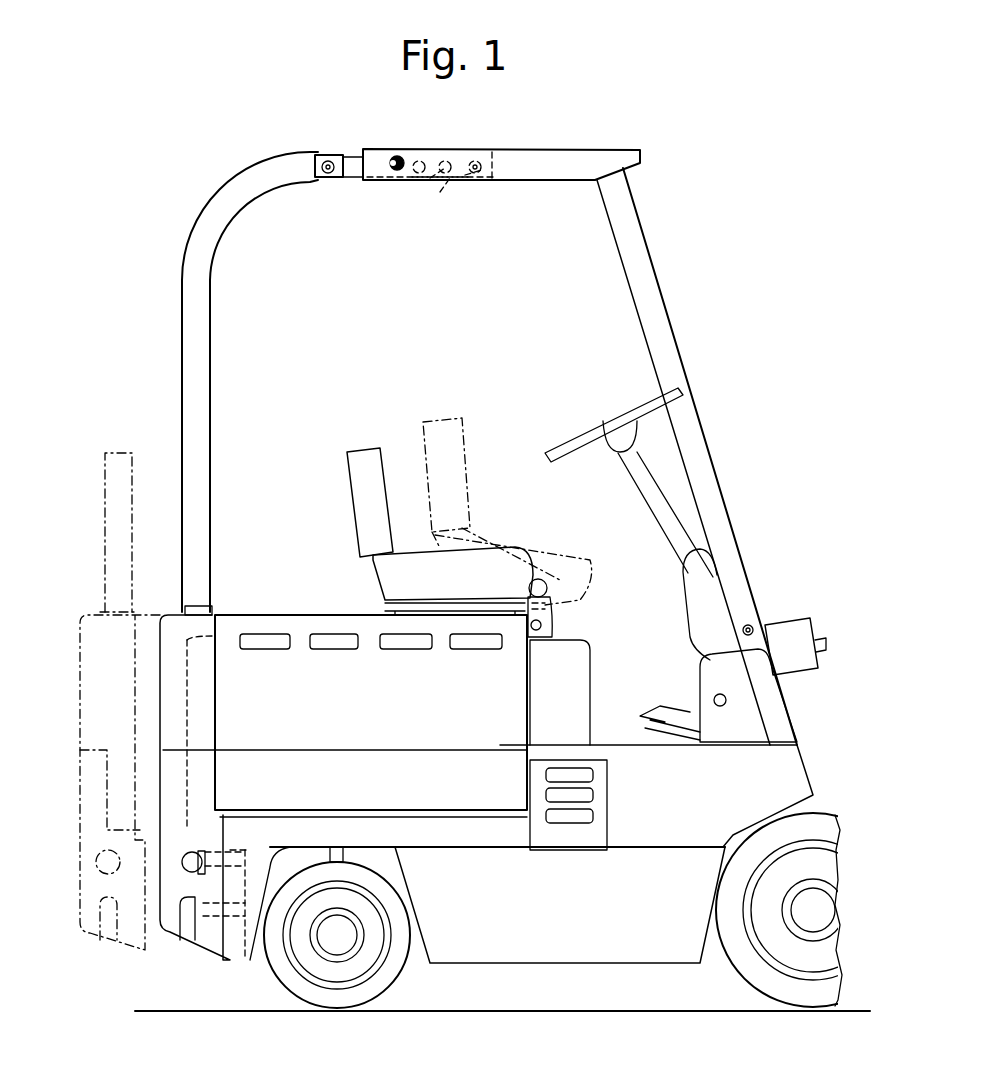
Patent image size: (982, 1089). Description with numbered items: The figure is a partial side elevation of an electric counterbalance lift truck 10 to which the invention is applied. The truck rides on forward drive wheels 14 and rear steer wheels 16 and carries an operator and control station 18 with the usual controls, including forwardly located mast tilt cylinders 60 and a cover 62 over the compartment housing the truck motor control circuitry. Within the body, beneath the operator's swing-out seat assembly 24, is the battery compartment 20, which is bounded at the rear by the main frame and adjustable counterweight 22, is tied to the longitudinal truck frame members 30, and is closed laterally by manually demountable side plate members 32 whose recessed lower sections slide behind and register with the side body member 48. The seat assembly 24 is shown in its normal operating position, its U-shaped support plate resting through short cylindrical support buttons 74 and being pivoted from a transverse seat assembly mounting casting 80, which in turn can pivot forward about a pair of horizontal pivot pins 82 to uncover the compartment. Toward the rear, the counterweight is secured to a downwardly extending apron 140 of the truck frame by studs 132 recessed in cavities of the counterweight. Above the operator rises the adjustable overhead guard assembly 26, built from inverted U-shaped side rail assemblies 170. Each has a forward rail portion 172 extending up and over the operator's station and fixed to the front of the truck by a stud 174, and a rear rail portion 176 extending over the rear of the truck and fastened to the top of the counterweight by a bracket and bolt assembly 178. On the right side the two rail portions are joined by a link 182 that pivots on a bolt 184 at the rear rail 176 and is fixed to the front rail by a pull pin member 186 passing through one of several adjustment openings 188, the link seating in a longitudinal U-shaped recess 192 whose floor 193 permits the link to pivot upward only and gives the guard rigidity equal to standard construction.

The electric counterbalance lift truck 10 is at (700, 317).
The forward drive wheels 14 is at (740, 976).
The rear steer wheels 16 is at (395, 963).
The operator and control station 18 is at (517, 454).
The battery compartment 20 is at (298, 603).
The main frame and adjustable counterweight 22 is at (173, 602).
The operator's swing-out seat assembly 24 is at (369, 572).
The adjustable overhead guard assembly 26 is at (277, 208).
The longitudinal truck frame members 30 is at (712, 800).
The side plate members 32 is at (370, 703).
The side body member 48 is at (448, 838).
The mast tilt cylinders 60 is at (785, 625).
The cover 62 is at (415, 560).
The support buttons 74 is at (410, 614).
The seat assembly mounting casting 80 is at (553, 616).
The horizontal pivot pins 82 is at (528, 630).
The studs 132 is at (188, 852).
The apron 140 is at (235, 950).
The side rail assemblies 170 is at (573, 135).
The forward rail portion 172 is at (640, 237).
The stud 174 is at (751, 626).
The rear rail portion 176 is at (187, 333).
The bracket and bolt assembly 178 is at (200, 608).
The link 182 is at (348, 157).
The bolt 184 is at (330, 178).
The pull pin member 186 is at (397, 158).
The adjustment openings 188 is at (431, 201).
The U-shaped recess 192 is at (490, 178).
The floor 193 is at (456, 182).